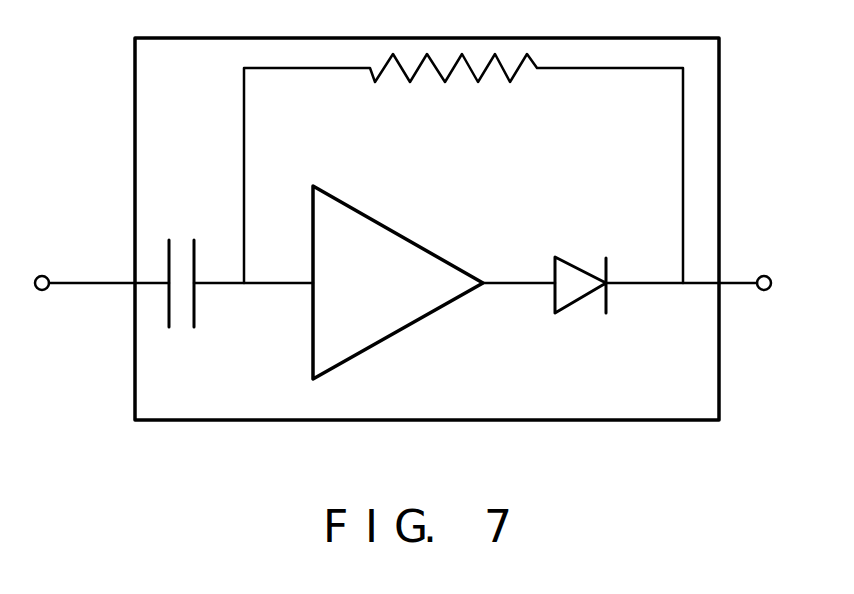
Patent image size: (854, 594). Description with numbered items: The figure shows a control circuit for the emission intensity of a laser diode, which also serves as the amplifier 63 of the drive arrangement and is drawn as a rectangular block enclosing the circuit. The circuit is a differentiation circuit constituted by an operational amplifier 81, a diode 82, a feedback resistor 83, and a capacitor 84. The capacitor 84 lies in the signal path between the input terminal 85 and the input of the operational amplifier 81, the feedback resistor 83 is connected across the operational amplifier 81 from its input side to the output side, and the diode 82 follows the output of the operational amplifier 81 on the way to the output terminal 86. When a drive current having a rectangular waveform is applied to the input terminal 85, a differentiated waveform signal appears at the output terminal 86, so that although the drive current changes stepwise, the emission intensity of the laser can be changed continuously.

The amplifier 63 is at (600, 423).
The operational amplifier 81 is at (435, 255).
The diode 82 is at (568, 257).
The feedback resistor 83 is at (485, 75).
The capacitor 84 is at (195, 317).
The input terminal 85 is at (48, 264).
The output terminal 86 is at (767, 267).